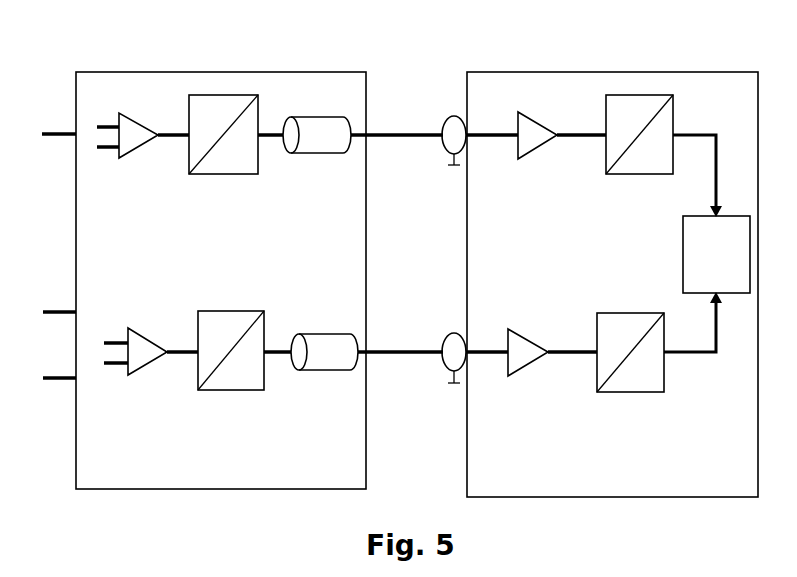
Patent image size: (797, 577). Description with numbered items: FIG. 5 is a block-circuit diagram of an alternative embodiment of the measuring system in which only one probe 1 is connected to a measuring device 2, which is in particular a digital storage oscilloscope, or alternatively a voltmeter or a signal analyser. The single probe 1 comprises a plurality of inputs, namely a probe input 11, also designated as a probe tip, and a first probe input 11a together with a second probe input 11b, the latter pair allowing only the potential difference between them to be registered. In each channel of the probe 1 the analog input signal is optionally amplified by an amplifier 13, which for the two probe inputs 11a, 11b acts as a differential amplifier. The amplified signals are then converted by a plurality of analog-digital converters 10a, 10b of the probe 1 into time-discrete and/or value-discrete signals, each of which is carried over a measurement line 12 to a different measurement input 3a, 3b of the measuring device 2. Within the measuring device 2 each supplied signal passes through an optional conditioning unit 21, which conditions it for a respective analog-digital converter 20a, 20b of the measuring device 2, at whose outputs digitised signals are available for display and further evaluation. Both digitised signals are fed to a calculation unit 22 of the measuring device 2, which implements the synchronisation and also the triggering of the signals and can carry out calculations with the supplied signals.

The probe 1 is at (193, 70).
The measuring device 2 is at (528, 70).
The first measurement input 3a is at (452, 116).
The second measurement input 3b is at (452, 333).
The analog-digital converter 10a is at (222, 175).
The analog-digital converter 10b is at (228, 392).
The probe input 11 is at (55, 132).
The first probe input 11a is at (55, 310).
The second probe input 11b is at (46, 380).
The measurement line 12 is at (330, 154).
The amplifier 13 is at (152, 138).
The analog-digital converter 20a is at (607, 162).
The analog-digital converter 20b is at (618, 394).
The conditioning unit 21 is at (516, 140).
The calculation unit 22 is at (683, 260).